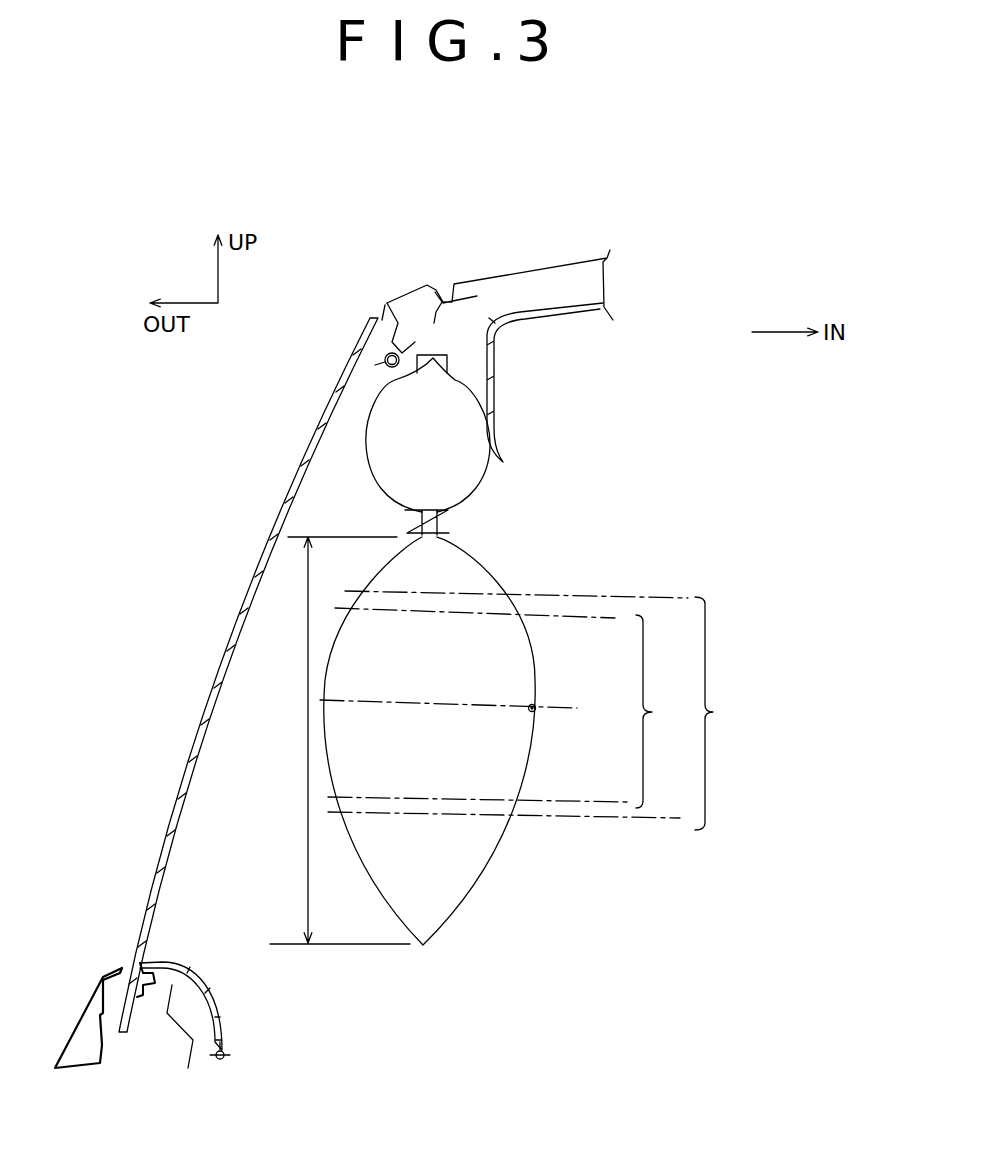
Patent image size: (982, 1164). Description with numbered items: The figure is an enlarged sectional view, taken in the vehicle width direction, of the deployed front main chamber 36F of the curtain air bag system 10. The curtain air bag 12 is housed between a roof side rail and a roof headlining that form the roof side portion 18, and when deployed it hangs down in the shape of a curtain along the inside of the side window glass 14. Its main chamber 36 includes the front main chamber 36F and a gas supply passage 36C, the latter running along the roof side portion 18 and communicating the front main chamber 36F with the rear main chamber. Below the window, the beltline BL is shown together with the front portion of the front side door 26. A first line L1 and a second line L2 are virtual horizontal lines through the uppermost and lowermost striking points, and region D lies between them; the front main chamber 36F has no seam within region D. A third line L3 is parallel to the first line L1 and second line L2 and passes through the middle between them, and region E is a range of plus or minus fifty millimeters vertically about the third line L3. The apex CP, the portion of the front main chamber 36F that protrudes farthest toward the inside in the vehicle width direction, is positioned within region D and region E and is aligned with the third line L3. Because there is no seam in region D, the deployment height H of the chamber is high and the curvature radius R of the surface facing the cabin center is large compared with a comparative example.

The curtain air bag system 10 is at (708, 429).
The curtain air bag 12 is at (466, 678).
The side window glass 14 is at (218, 665).
The roof side portion 18 is at (422, 283).
The front side door 26 is at (242, 1030).
The main chamber 36 is at (473, 926).
The gas supply passage 36C is at (482, 482).
The front main chamber 36F is at (463, 902).
The beltline BL is at (173, 952).
The apex CP is at (532, 708).
The curvature radius R is at (523, 722).
The deployment height H is at (340, 740).
The region E is at (501, 708).
The region D is at (717, 713).
The first line L1 is at (647, 590).
The second line L2 is at (618, 822).
The third line L3 is at (553, 710).